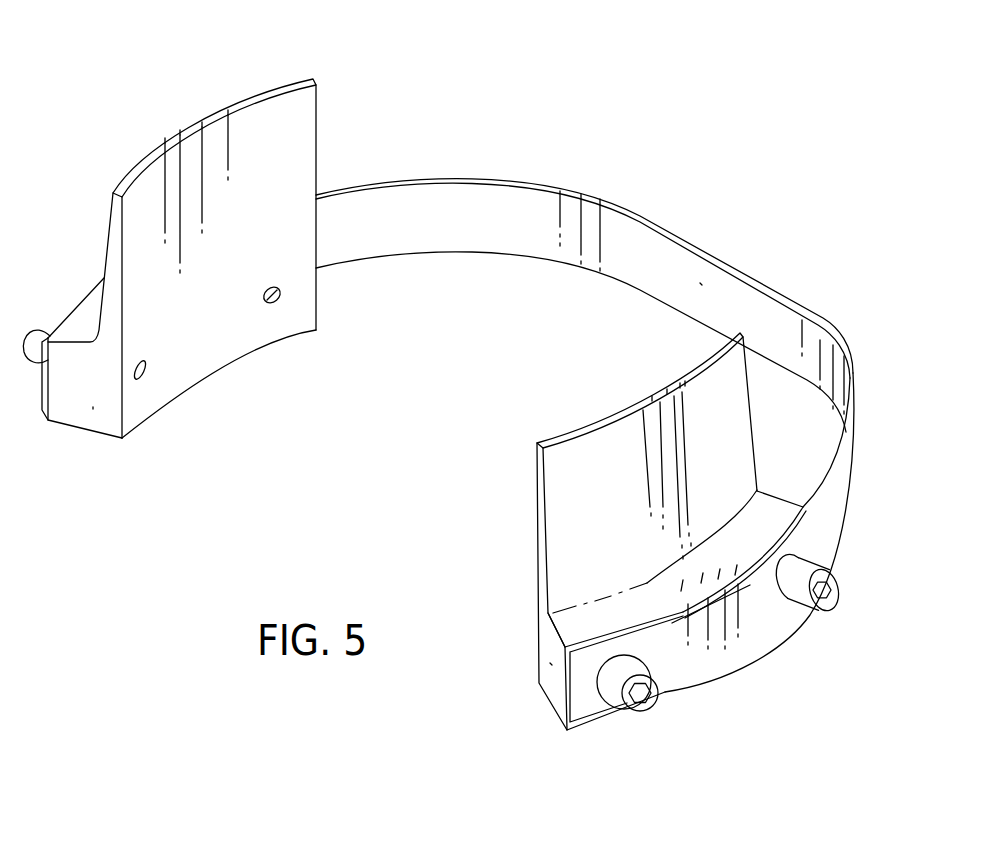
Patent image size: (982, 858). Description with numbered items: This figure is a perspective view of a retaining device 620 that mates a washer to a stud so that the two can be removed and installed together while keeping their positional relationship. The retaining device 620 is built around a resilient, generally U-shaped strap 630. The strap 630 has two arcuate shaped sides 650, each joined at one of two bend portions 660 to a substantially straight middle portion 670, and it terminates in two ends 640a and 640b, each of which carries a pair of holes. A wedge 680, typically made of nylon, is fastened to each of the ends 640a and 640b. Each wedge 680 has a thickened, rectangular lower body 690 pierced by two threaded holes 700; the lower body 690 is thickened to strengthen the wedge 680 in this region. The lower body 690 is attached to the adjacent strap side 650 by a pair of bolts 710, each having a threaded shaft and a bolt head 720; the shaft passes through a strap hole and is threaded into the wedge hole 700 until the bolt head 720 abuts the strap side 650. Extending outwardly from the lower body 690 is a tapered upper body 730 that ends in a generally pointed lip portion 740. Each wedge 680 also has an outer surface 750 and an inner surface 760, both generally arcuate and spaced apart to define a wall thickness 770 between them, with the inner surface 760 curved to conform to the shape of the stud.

The retaining device 620 is at (581, 112).
The strap 630 is at (638, 205).
The end 640a is at (40, 387).
The end 640b is at (578, 730).
The arcuate shaped side 650 is at (408, 180).
The bend portion 660 is at (575, 243).
The middle portion 670 is at (700, 283).
The wedge 680 is at (238, 85).
The lower body 690 is at (93, 407).
The threaded hole 700 is at (263, 298).
The bolt 710 is at (650, 705).
The bolt head 720 is at (613, 680).
The upper body 730 is at (170, 282).
The lip portion 740 is at (167, 140).
The outer surface 750 is at (545, 532).
The inner surface 760 is at (317, 138).
The wall thickness 770 is at (113, 227).